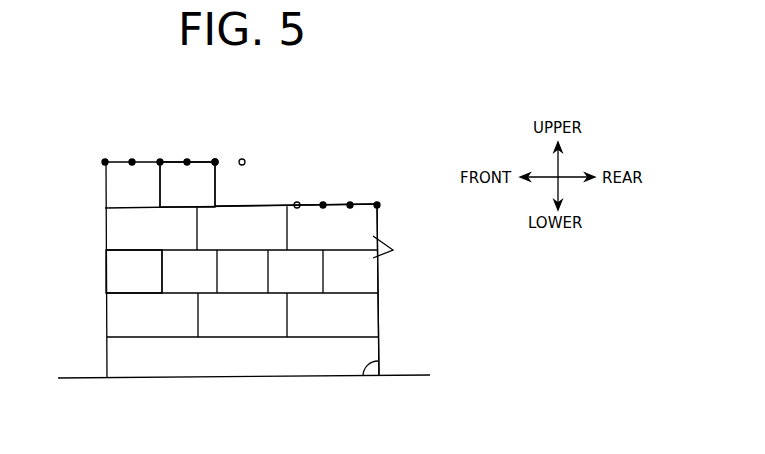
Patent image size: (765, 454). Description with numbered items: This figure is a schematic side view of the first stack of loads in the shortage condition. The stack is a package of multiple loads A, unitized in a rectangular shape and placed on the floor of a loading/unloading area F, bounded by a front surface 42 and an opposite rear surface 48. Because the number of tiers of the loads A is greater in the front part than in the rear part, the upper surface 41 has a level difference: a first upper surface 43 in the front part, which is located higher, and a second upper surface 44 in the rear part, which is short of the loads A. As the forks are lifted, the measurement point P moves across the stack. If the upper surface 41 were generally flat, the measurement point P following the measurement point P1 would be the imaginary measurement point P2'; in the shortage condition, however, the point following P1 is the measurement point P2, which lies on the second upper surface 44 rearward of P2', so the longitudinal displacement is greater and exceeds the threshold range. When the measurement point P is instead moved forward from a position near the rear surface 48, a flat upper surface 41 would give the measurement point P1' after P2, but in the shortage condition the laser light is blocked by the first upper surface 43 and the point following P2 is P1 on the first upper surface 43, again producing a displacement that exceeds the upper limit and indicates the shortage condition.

The upper surface 41 is at (278, 147).
The front surface 42 is at (105, 268).
The first upper surface 43 is at (175, 160).
The second upper surface 44 is at (273, 203).
The rear surface 48 is at (381, 278).
The load A is at (393, 249).
The floor of a loading/unloading area F is at (382, 362).
The measurement point P is at (160, 160).
The measurement point P1 is at (224, 142).
The imaginary measurement point P2' is at (256, 127).
The measurement point P1' is at (309, 170).
The measurement point P2 is at (345, 186).